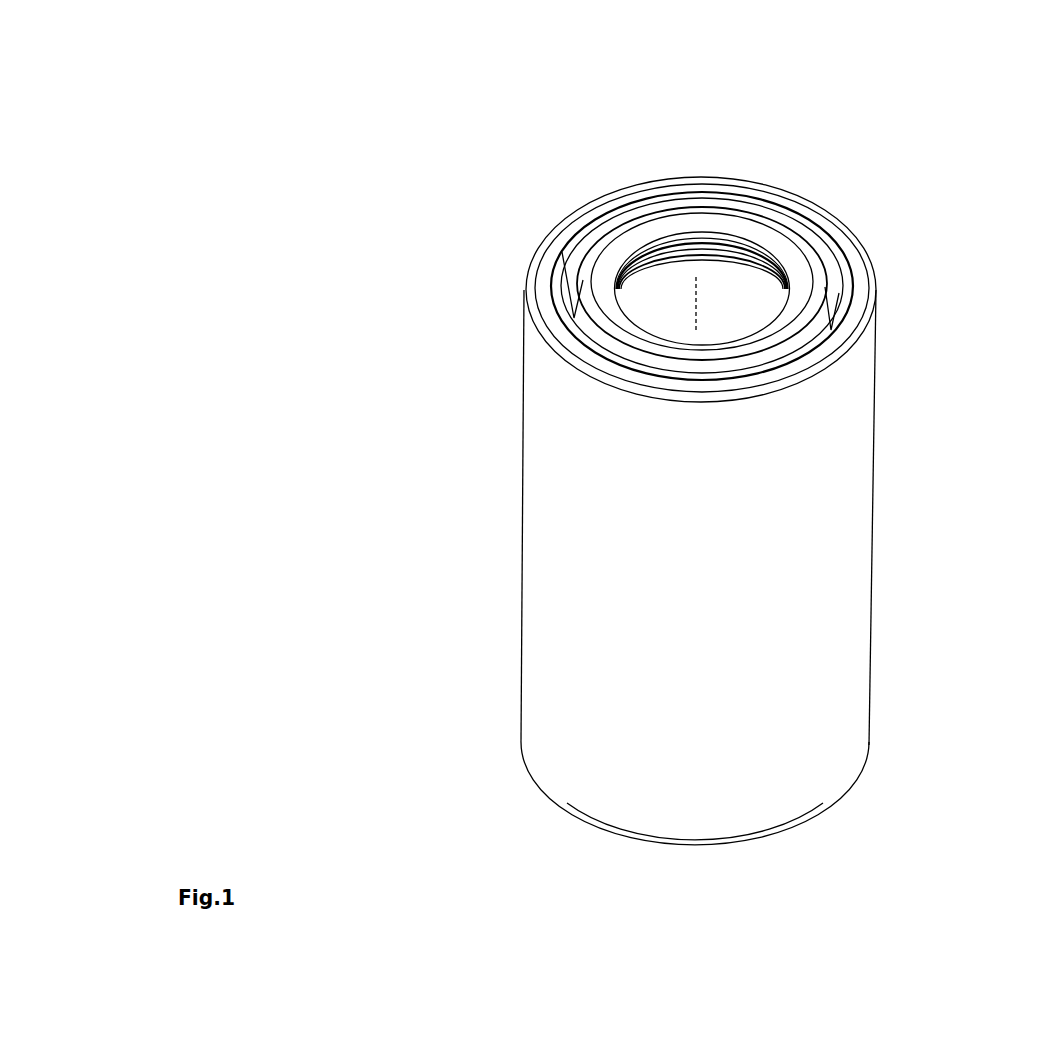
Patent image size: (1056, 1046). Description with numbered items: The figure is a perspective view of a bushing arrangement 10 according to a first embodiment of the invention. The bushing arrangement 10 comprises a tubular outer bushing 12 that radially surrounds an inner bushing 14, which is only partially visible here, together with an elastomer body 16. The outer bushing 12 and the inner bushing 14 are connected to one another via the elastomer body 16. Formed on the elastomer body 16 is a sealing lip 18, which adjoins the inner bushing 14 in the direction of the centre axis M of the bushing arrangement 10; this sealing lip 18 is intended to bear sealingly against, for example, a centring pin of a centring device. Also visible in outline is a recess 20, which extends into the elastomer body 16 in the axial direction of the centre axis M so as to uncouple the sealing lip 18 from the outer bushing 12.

The bushing arrangement 10 is at (891, 157).
The outer bushing 12 is at (558, 457).
The inner bushing 14 is at (718, 276).
The elastomer body 16 is at (596, 301).
The sealing lip 18 is at (643, 218).
The recess 20 is at (568, 262).
The centre axis M is at (697, 301).